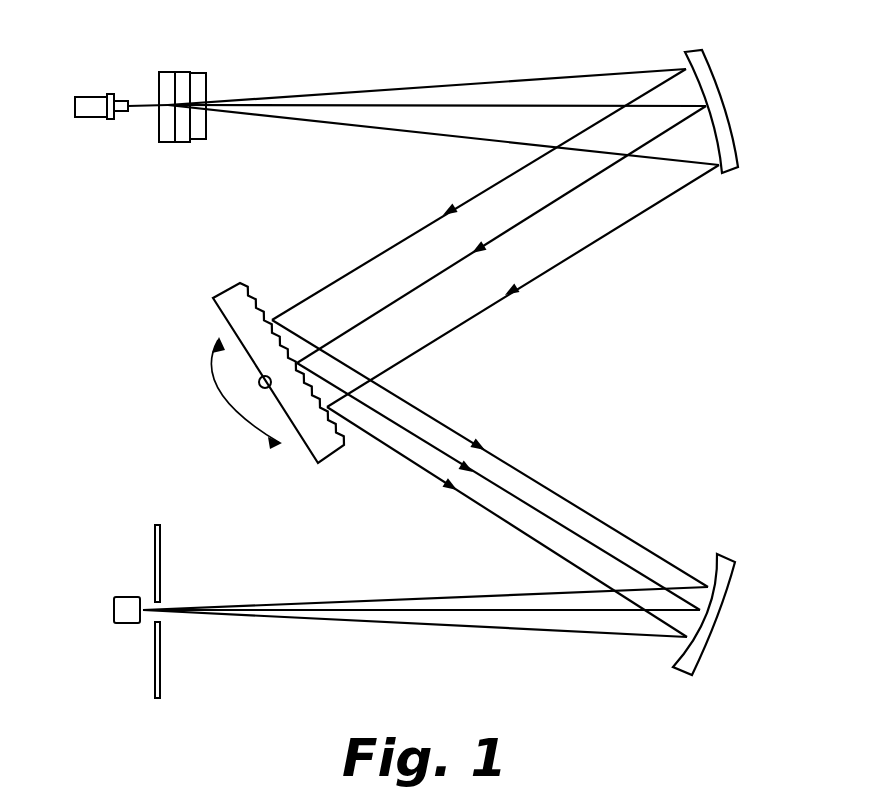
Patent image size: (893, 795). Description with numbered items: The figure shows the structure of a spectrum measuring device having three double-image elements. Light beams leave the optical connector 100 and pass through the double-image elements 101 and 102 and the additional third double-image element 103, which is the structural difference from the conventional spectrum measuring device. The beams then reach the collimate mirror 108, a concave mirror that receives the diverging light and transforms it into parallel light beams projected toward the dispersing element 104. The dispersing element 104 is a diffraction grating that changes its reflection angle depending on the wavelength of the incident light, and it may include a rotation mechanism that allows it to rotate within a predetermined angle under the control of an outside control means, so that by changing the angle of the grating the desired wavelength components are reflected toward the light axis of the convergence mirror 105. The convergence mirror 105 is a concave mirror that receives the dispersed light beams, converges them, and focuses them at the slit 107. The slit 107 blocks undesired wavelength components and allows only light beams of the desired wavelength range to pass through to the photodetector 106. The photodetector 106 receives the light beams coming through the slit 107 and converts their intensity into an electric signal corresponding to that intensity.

The optical connector 100 is at (100, 118).
The double-image element 101 is at (168, 71).
The double-image element 102 is at (182, 71).
The third double-image element 103 is at (201, 72).
The dispersing element 104 is at (227, 325).
The convergence mirror 105 is at (723, 592).
The photodetector 106 is at (128, 597).
The slit 107 is at (152, 680).
The collimate mirror 108 is at (727, 117).